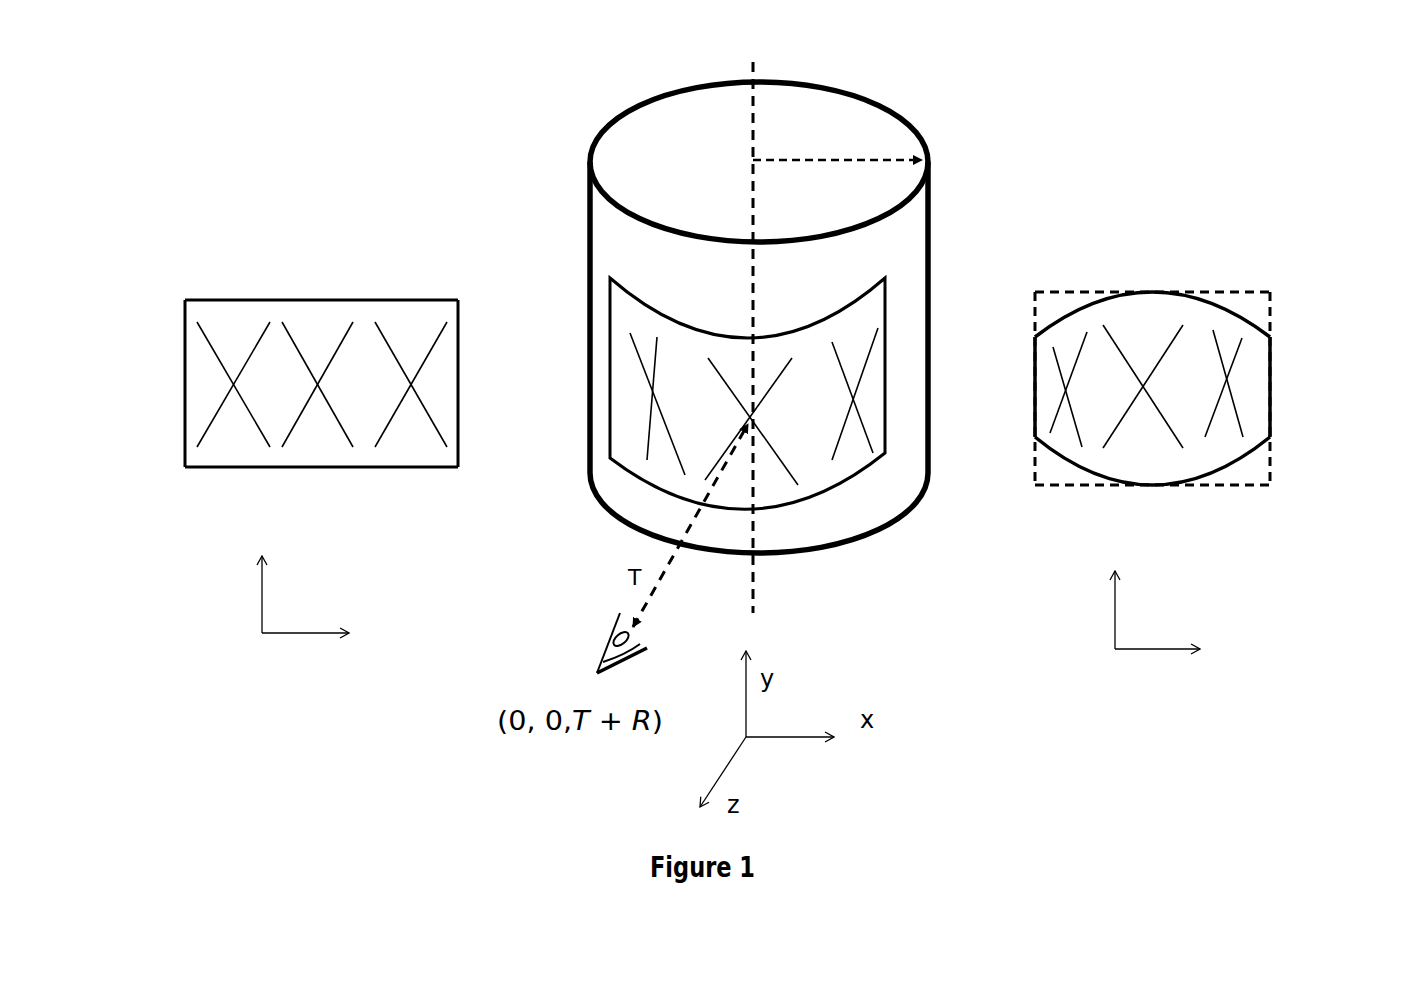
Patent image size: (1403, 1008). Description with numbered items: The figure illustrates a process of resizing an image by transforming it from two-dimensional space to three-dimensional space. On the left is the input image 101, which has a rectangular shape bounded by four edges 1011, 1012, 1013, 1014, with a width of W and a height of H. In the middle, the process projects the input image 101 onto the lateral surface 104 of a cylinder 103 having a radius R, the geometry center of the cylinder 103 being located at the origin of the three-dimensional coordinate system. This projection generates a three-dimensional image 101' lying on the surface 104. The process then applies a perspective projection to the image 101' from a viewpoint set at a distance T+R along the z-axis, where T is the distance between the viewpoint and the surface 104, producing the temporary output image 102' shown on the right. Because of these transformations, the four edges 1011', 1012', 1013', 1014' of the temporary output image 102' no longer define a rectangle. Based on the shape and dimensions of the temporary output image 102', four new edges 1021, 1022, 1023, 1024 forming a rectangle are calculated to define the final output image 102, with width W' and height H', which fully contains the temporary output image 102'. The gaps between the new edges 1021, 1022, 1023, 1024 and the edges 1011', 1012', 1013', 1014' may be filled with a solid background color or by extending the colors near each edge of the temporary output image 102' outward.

The input image 101 is at (328, 428).
The edge of input image 1011 is at (336, 279).
The edge of input image 1012 is at (498, 383).
The edge of input image 1013 is at (321, 490).
The edge of input image 1014 is at (151, 392).
The cylinder 103 is at (815, 44).
The lateral surface 104 is at (759, 357).
The 3D image 101' is at (802, 453).
The final output image 102 is at (1178, 361).
The temporary output image 102' is at (1178, 378).
The new edge of final output image 1021 is at (1062, 288).
The new edge of final output image 1022 is at (1272, 313).
The new edge of final output image 1023 is at (1065, 487).
The new edge of final output image 1024 is at (1036, 292).
The edge of temporary output image 1011' is at (1163, 268).
The edge of temporary output image 1012' is at (1329, 400).
The edge of temporary output image 1013' is at (1180, 497).
The edge of temporary output image 1014' is at (1001, 423).